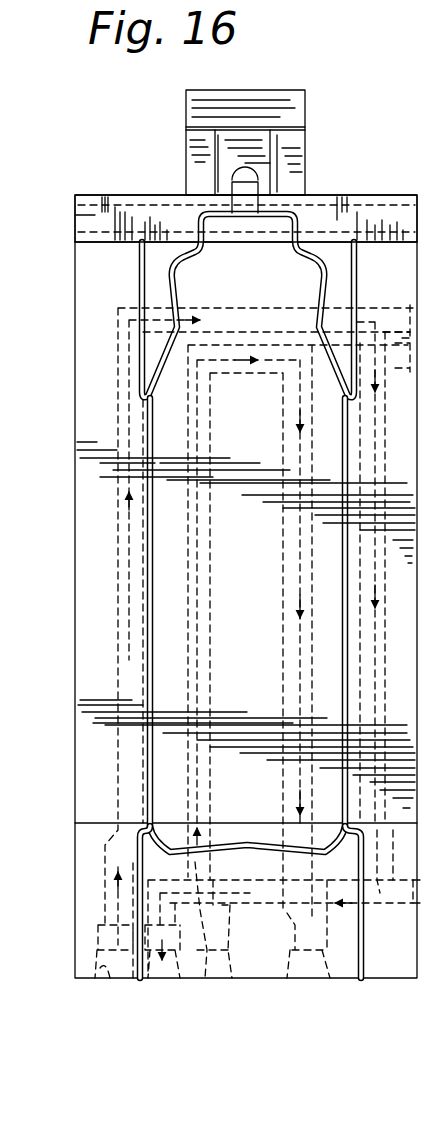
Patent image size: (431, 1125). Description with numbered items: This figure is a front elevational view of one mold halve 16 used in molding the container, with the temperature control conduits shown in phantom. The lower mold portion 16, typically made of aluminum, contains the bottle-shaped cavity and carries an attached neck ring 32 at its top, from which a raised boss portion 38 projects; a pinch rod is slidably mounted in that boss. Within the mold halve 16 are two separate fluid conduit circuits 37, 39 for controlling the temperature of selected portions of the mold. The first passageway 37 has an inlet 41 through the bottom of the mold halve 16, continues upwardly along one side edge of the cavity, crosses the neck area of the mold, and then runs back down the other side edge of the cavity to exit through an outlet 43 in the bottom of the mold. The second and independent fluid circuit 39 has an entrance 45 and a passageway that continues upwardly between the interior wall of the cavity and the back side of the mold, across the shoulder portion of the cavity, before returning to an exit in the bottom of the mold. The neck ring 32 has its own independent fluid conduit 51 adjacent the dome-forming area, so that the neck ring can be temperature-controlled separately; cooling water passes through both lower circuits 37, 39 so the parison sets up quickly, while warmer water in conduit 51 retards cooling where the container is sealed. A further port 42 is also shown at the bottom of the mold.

The mold halve 16 is at (85, 468).
The neck ring 32 is at (90, 195).
The raised boss portion 38 is at (300, 92).
The fluid conduit 51 is at (73, 216).
The fluid conduit circuit 37 is at (265, 564).
The second fluid circuit 39 is at (298, 632).
The inlet 41 is at (108, 980).
The cooling fluid outlet port 42 is at (318, 980).
The outlet 43 is at (168, 980).
The entrance 45 is at (220, 980).